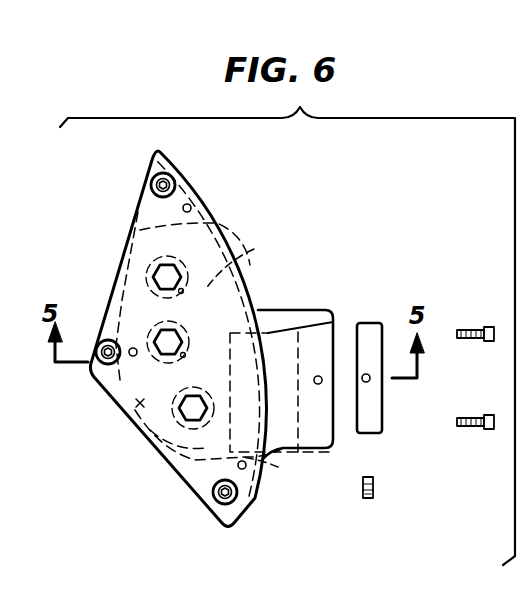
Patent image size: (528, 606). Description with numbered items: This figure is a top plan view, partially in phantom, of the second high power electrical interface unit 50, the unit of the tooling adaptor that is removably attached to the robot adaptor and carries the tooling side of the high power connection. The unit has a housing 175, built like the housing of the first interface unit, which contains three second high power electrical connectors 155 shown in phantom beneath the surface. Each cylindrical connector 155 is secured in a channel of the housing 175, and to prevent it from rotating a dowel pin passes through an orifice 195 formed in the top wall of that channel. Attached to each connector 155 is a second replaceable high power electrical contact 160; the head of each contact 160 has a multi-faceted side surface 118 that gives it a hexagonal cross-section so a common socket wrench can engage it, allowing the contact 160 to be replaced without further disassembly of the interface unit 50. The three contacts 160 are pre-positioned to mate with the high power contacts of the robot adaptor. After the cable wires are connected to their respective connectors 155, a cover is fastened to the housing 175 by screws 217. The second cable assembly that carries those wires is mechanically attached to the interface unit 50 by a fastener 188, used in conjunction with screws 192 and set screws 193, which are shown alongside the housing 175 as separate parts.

The second high power electrical interface unit 50 is at (110, 476).
The side surface 118 is at (168, 175).
The second high power electrical connector 155 is at (140, 230).
The second replaceable high power electrical contact 160 is at (170, 277).
The housing 175 is at (278, 328).
The fastener 188 is at (372, 340).
The screws 192 is at (473, 416).
The set screws 193 is at (374, 487).
The orifice 195 is at (254, 249).
The screws 217 is at (189, 205).